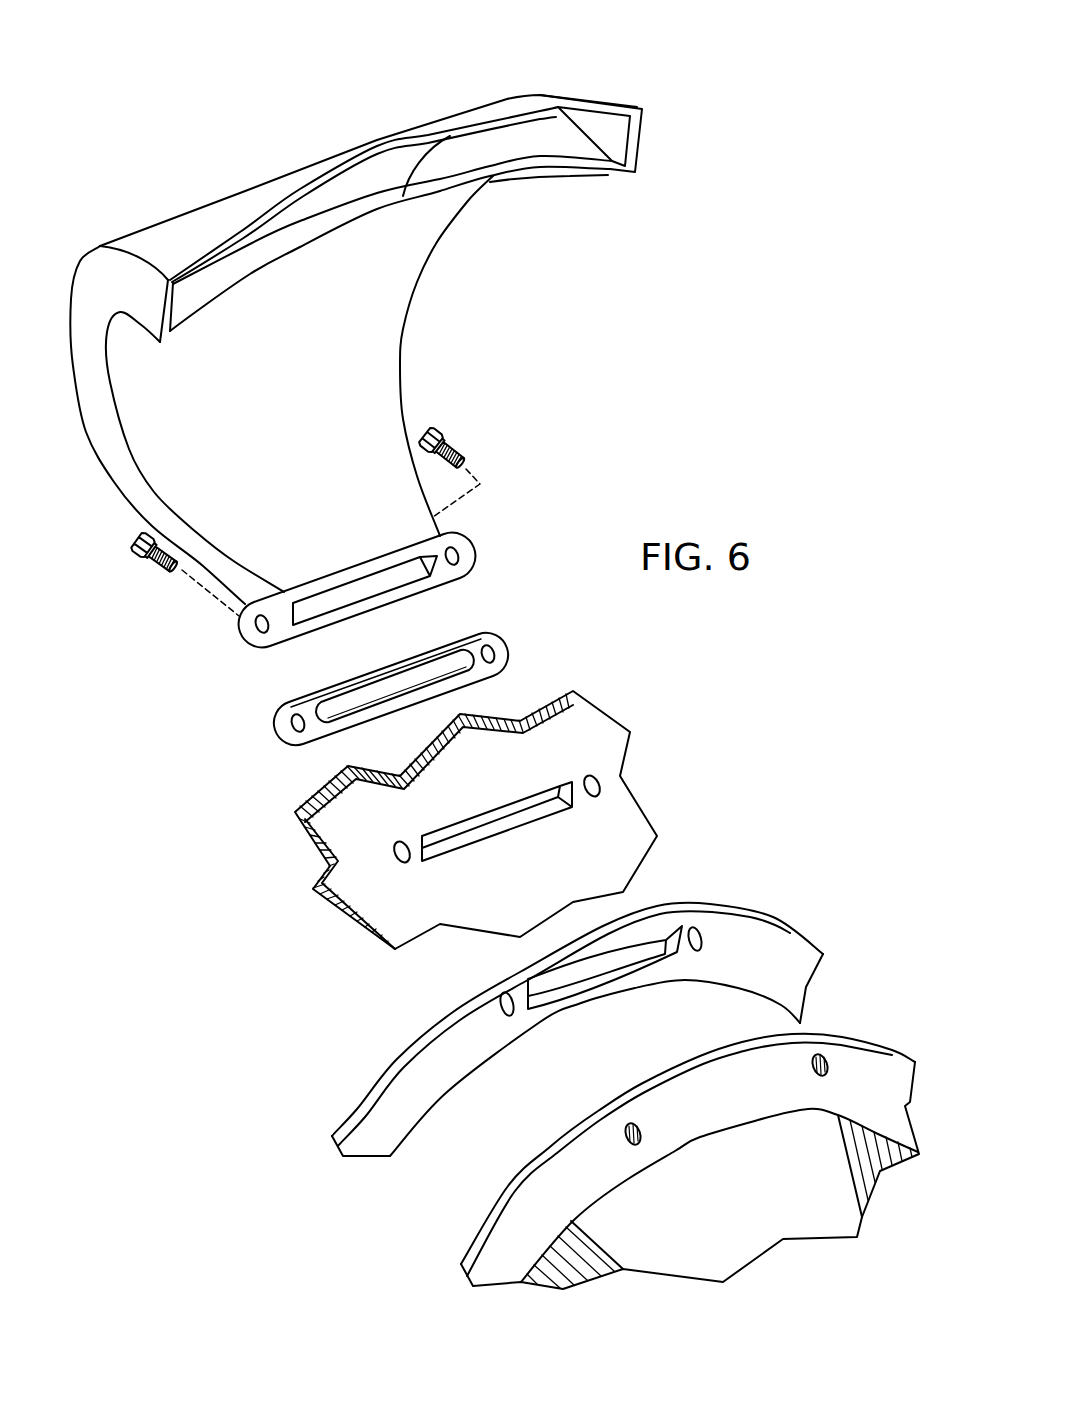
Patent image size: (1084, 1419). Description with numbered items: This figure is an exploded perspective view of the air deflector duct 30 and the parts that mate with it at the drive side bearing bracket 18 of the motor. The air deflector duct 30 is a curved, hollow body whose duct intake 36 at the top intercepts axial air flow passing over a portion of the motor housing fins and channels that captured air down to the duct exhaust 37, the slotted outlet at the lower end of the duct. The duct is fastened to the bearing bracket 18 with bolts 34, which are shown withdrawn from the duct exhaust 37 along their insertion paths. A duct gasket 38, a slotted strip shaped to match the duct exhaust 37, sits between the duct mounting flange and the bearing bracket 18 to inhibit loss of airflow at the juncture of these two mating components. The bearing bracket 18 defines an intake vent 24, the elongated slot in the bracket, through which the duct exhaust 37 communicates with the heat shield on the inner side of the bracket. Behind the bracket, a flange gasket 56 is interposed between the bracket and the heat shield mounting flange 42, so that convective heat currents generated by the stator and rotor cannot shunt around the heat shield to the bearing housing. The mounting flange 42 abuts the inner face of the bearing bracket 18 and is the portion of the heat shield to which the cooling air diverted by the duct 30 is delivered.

The air deflector duct 30 is at (282, 153).
The duct intake 36 is at (523, 133).
The bolts 34 is at (443, 432).
The duct exhaust 37 is at (330, 600).
The duct gasket 38 is at (503, 643).
The drive side bearing bracket 18 is at (370, 897).
The intake vent 24 is at (547, 812).
The flange gasket 56 is at (762, 958).
The heat shield mounting flange 42 is at (673, 1110).